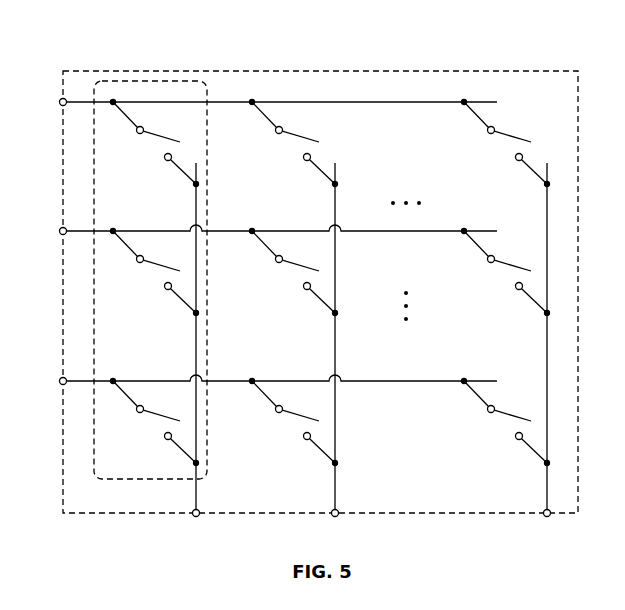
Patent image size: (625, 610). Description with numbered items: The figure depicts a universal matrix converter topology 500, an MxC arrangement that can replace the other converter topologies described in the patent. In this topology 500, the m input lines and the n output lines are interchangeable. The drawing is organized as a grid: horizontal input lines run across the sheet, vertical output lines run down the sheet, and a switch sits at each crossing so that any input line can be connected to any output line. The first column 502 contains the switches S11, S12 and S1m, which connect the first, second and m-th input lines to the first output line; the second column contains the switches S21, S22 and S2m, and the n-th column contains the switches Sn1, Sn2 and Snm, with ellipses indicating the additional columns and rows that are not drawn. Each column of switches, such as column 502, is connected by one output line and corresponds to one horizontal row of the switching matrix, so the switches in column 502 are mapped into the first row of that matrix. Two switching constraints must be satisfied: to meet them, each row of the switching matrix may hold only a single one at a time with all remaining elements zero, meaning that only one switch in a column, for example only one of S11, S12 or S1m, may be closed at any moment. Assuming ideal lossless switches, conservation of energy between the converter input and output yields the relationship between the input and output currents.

The universal matrix converter topology 500 is at (78, 42).
The column 502 is at (167, 80).
The switch S11 is at (155, 143).
The switch S12 is at (155, 272).
The switch S1m is at (155, 422).
The switch S21 is at (294, 143).
The switch S22 is at (294, 272).
The switch S2m is at (294, 422).
The switch Sn1 is at (506, 143).
The switch Sn2 is at (506, 272).
The switch Snm is at (506, 422).